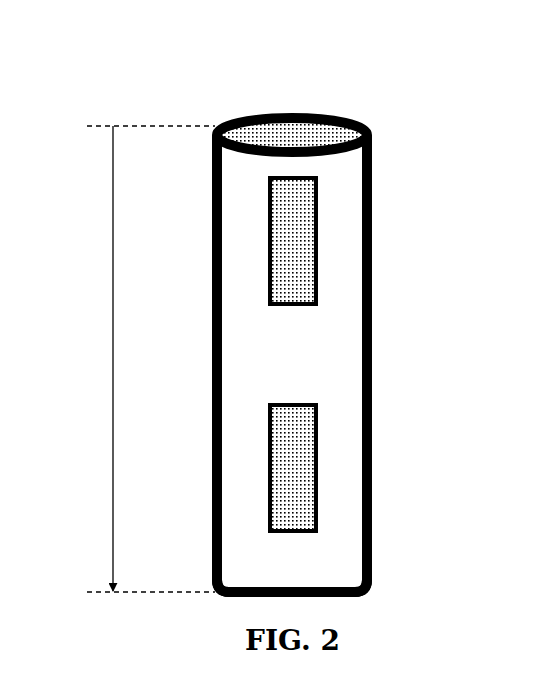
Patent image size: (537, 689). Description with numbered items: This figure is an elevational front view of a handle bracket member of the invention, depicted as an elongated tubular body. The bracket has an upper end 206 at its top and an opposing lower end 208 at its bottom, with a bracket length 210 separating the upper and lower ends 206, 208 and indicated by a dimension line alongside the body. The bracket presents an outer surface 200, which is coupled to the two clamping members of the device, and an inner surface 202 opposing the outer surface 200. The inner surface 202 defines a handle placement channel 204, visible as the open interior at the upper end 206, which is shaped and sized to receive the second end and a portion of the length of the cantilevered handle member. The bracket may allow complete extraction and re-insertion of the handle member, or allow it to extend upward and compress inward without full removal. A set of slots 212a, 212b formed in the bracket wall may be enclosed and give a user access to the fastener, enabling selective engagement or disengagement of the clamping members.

The outer surface 200 is at (243, 332).
The inner surface 202 is at (249, 133).
The handle placement channel 204 is at (330, 130).
The upper end 206 is at (370, 122).
The lower end 208 is at (369, 590).
The bracket length 210 is at (112, 392).
The slot 212a is at (292, 232).
The slot 212b is at (291, 418).